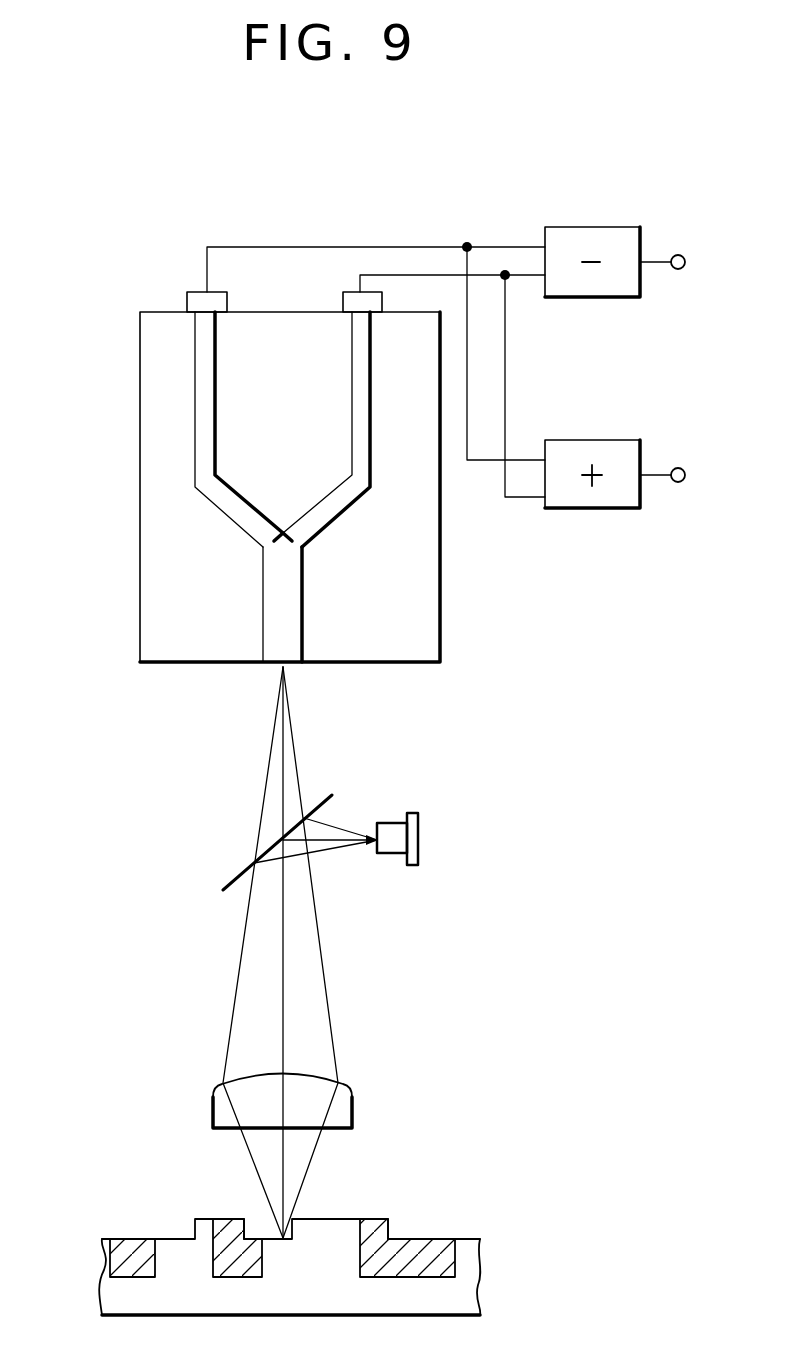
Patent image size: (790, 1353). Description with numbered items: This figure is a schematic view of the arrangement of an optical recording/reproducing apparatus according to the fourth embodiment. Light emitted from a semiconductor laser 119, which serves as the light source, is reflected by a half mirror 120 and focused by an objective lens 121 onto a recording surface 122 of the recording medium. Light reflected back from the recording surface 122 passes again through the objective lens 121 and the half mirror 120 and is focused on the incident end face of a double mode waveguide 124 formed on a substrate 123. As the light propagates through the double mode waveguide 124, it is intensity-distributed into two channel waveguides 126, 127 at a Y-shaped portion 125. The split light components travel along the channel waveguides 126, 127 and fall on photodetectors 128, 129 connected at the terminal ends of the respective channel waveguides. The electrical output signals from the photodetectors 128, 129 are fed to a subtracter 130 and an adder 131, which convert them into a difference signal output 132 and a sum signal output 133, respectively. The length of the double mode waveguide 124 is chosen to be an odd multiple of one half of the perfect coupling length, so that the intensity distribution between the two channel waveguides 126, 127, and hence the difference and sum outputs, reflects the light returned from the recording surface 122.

The semiconductor laser 119 is at (418, 830).
The half mirror 120 is at (320, 790).
The objective lens 121 is at (218, 1098).
The recording surface 122 is at (402, 1228).
The substrate 123 is at (143, 627).
The double mode waveguide 124 is at (297, 600).
The Y-shaped portion 125 is at (278, 546).
The channel waveguide 126 is at (193, 407).
The channel waveguide 127 is at (360, 402).
The photodetector 128 is at (190, 302).
The photodetector 129 is at (348, 300).
The subtracter 130 is at (587, 298).
The adder 131 is at (588, 509).
The difference signal output 132 is at (675, 283).
The sum signal output 133 is at (673, 499).